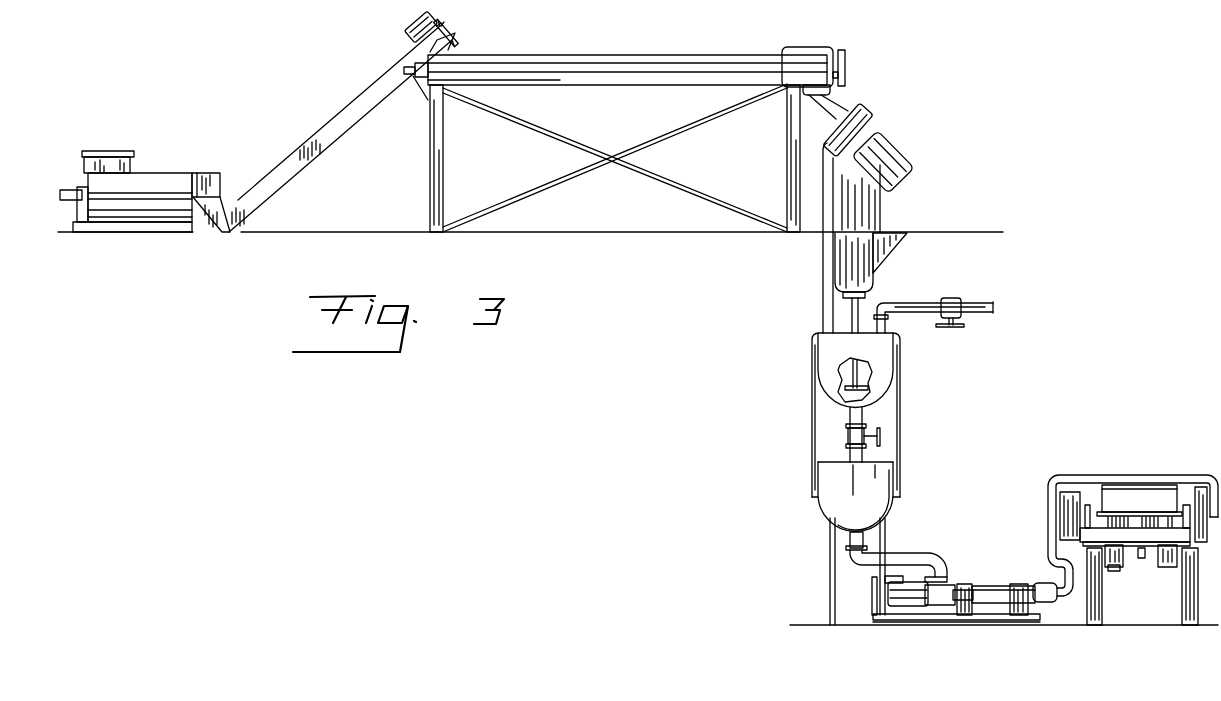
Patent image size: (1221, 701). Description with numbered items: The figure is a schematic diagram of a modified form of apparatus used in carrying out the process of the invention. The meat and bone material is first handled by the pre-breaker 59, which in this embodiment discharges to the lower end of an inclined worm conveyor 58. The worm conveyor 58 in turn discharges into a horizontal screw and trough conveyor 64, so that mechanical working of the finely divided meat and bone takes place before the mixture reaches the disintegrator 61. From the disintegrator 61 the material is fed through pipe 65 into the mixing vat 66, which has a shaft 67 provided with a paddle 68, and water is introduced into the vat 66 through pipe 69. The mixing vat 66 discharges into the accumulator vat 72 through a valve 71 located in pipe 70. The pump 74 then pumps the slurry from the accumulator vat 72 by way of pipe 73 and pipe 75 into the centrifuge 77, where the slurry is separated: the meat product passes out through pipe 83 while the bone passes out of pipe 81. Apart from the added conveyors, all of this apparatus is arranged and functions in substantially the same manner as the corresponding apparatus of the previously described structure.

The inclined worm conveyor 58 is at (327, 137).
The pre-breaker 59 is at (157, 173).
The disintegrator 61 is at (874, 130).
The horizontal screw and trough conveyor 64 is at (622, 55).
The pipe 65 is at (823, 290).
The mixing vat 66 is at (890, 362).
The shaft 67 is at (860, 308).
The paddle 68 is at (872, 385).
The pipe 69 is at (980, 303).
The pipe 70 is at (862, 418).
The valve 71 is at (868, 437).
The accumulator vat 72 is at (883, 480).
The pipe 73 is at (925, 560).
The pump 74 is at (990, 583).
The pipe 75 is at (1128, 477).
The centrifuge 77 is at (1168, 483).
The pipe 81 is at (1170, 567).
The pipe 83 is at (1115, 568).